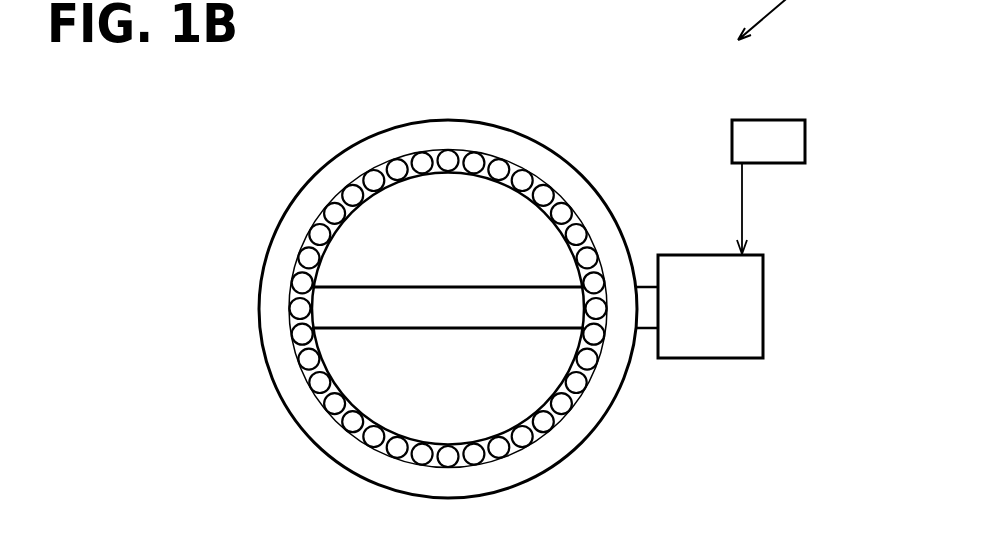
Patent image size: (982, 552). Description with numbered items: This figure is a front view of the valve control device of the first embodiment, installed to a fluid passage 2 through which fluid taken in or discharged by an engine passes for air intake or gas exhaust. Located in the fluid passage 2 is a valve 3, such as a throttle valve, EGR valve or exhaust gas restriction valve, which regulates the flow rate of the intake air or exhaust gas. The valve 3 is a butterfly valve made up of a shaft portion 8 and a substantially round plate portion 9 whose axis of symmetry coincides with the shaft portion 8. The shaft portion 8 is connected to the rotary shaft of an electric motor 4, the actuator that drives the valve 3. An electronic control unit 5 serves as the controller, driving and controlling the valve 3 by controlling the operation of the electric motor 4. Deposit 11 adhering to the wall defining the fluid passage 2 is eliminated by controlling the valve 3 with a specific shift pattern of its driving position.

The fluid passage 2 is at (433, 170).
The deposit 11 is at (468, 162).
The valve 3 is at (510, 343).
The shaft portion 8 is at (509, 315).
The plate portion 9 is at (485, 370).
The electric motor 4 is at (749, 330).
The electronic control unit 5 is at (793, 152).